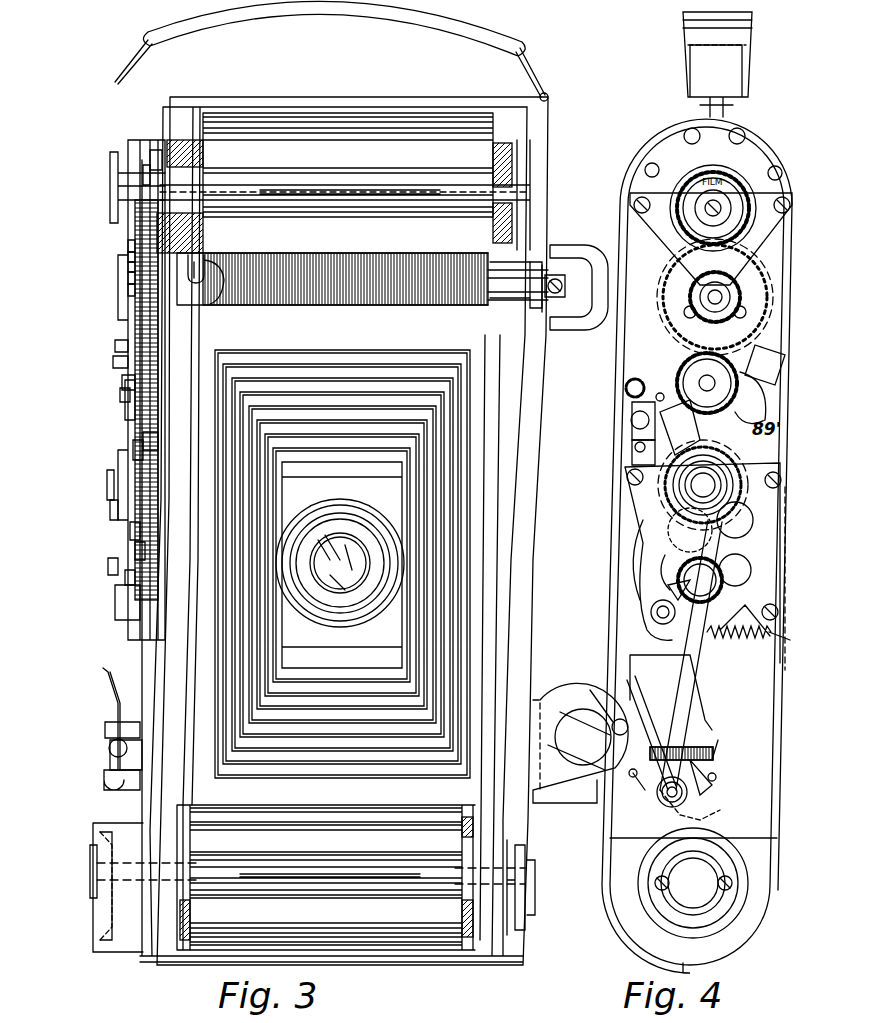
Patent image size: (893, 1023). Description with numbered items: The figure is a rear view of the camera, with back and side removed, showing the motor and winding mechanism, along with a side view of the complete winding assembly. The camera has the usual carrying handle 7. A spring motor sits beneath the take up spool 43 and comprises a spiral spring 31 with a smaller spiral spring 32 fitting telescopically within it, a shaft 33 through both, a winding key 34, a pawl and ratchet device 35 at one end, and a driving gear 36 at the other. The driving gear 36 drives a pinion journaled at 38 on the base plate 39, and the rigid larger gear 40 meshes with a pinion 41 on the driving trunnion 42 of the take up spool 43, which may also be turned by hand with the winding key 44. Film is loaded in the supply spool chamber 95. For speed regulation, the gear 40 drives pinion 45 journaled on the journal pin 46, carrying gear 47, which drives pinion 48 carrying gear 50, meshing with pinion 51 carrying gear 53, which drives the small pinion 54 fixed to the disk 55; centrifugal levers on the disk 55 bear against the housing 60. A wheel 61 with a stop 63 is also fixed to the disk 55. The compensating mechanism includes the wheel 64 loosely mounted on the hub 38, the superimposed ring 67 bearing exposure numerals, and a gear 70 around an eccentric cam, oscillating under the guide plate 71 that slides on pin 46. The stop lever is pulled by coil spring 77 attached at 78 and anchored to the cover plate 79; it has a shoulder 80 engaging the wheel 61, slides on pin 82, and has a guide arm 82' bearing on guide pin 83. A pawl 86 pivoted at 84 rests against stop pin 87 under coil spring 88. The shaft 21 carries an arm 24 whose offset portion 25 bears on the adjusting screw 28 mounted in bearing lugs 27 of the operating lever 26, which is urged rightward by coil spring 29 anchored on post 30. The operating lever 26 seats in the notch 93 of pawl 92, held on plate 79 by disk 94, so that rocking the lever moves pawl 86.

In FIG. 3, the carrying handle 7 is at (150, 33).
In FIG. 4, the carrying handle 7 is at (740, 30).
In FIG. 4, the shaft 21 is at (700, 793).
In FIG. 3, the arm 24 is at (123, 797).
In FIG. 4, the arm 24 is at (710, 785).
In FIG. 3, the offset portion 25 is at (108, 757).
In FIG. 4, the offset portion 25 is at (713, 755).
In FIG. 3, the operating lever 26 is at (103, 668).
In FIG. 4, the operating lever 26 is at (695, 683).
In FIG. 3, the bearing lugs 27 is at (105, 731).
In FIG. 4, the bearing lugs 27 is at (630, 655).
In FIG. 4, the adjusting screw 28 is at (637, 627).
In FIG. 4, the coil spring 29 is at (647, 792).
In FIG. 4, the post 30 is at (620, 720).
In FIG. 3, the spiral spring 31 is at (265, 272).
In FIG. 3, the smaller spiral spring 32 is at (208, 270).
In FIG. 3, the shaft 33 is at (515, 285).
In FIG. 3, the winding key 34 is at (560, 250).
In FIG. 3, the pawl and ratchet device 35 is at (545, 297).
In FIG. 3, the driving gear 36 is at (127, 278).
In FIG. 4, the driving gear 36 is at (632, 365).
In FIG. 4, the journal 38 is at (722, 297).
In FIG. 4, the base plate 39 is at (637, 530).
In FIG. 3, the gear 40 is at (127, 268).
In FIG. 3, the pinion 41 is at (145, 176).
In FIG. 3, the driving trunnion 42 is at (152, 160).
In FIG. 3, the take up spool 43 is at (460, 193).
In FIG. 3, the winding key 44 is at (110, 160).
In FIG. 3, the pinion 45 is at (123, 395).
In FIG. 3, the journal pin 46 is at (127, 382).
In FIG. 4, the journal pin 46 is at (707, 383).
In FIG. 3, the gear 47 is at (115, 362).
In FIG. 3, the pinion 48 is at (140, 450).
In FIG. 3, the gear 50 is at (150, 440).
In FIG. 3, the pinion 51 is at (113, 510).
In FIG. 3, the gear 53 is at (137, 530).
In FIG. 3, the pinion 54 is at (132, 577).
In FIG. 3, the disk 55 is at (140, 550).
In FIG. 4, the disk 55 is at (723, 588).
In FIG. 3, the housing 60 is at (145, 550).
In FIG. 3, the wheel 61 is at (113, 567).
In FIG. 4, the stop 63 is at (673, 588).
In FIG. 3, the wheel 64 is at (128, 256).
In FIG. 3, the ring 67 is at (132, 245).
In FIG. 3, the gear 70 is at (127, 288).
In FIG. 4, the gear 70 is at (743, 285).
In FIG. 3, the guide plate 71 is at (117, 345).
In FIG. 4, the coil spring 77 is at (770, 637).
In FIG. 4, the attachment point 78 is at (707, 650).
In FIG. 4, the cover plate 79 is at (762, 563).
In FIG. 4, the shoulder 80 is at (678, 575).
In FIG. 4, the pin 82 is at (619, 606).
In FIG. 4, the guide arm 82' is at (786, 398).
In FIG. 4, the guide pin 83 is at (757, 348).
In FIG. 4, the pivot 84 is at (662, 417).
In FIG. 4, the pawl 86 is at (680, 430).
In FIG. 4, the stop pin 87 is at (700, 447).
In FIG. 4, the coil spring 88 is at (657, 397).
In FIG. 4, the pawl 92 is at (703, 470).
In FIG. 4, the notch 93 is at (727, 532).
In FIG. 3, the disk 94 is at (110, 485).
In FIG. 4, the disk 94 is at (727, 470).
In FIG. 3, the supply spool chamber 95 is at (405, 924).